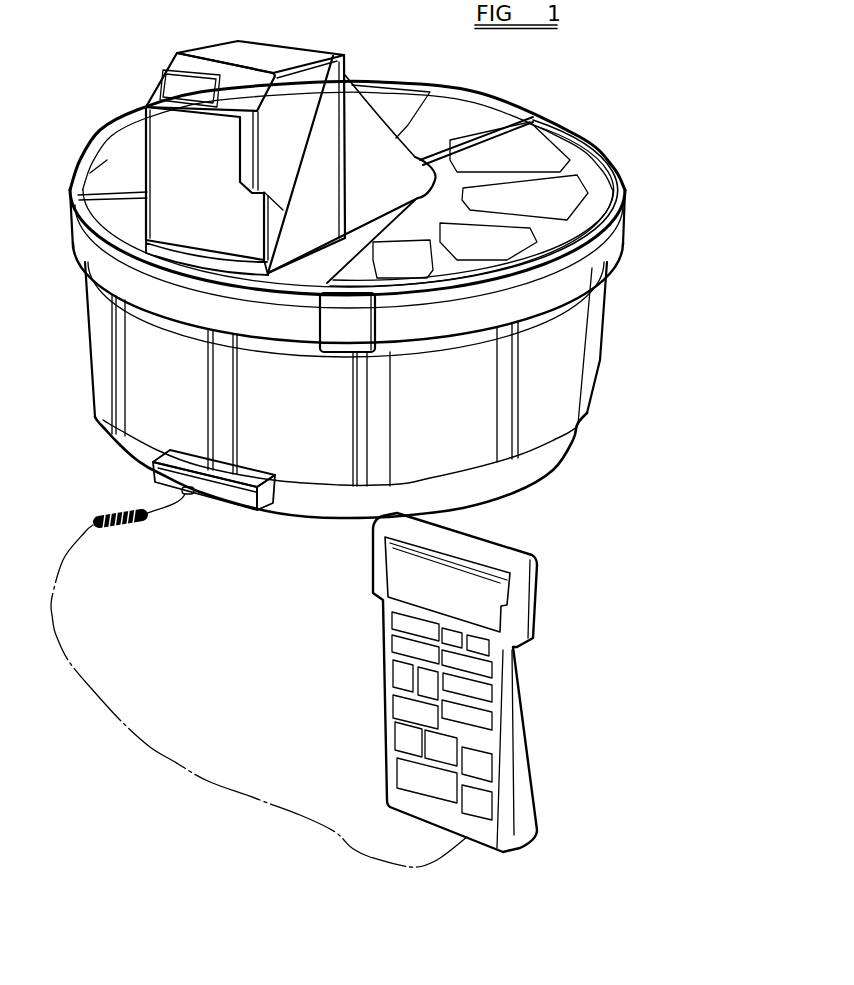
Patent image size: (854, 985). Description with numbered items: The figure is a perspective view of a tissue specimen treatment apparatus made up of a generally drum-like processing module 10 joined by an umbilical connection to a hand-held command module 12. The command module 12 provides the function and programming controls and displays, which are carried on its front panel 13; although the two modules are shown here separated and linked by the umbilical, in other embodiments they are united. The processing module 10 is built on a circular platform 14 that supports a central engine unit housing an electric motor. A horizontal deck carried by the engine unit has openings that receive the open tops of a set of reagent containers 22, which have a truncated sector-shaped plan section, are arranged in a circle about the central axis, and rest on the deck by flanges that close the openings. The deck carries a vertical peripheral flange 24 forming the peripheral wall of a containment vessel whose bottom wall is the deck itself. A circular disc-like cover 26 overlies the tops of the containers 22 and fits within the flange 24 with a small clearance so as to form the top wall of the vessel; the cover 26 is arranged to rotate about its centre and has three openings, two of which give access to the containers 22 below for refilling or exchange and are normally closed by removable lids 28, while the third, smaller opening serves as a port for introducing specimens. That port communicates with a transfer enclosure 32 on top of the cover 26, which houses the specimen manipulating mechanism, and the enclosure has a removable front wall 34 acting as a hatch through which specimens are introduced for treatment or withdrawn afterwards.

The processing module 10 is at (70, 351).
The command module 12 is at (505, 560).
The front panel 13 is at (397, 580).
The circular platform 14 is at (563, 447).
The reagent containers 22 is at (618, 362).
The vertical peripheral flange 24 is at (613, 252).
The cover 26 is at (117, 218).
The removable lids 28 is at (443, 185).
The transfer enclosure 32 is at (341, 164).
The removable front wall 34 is at (245, 158).